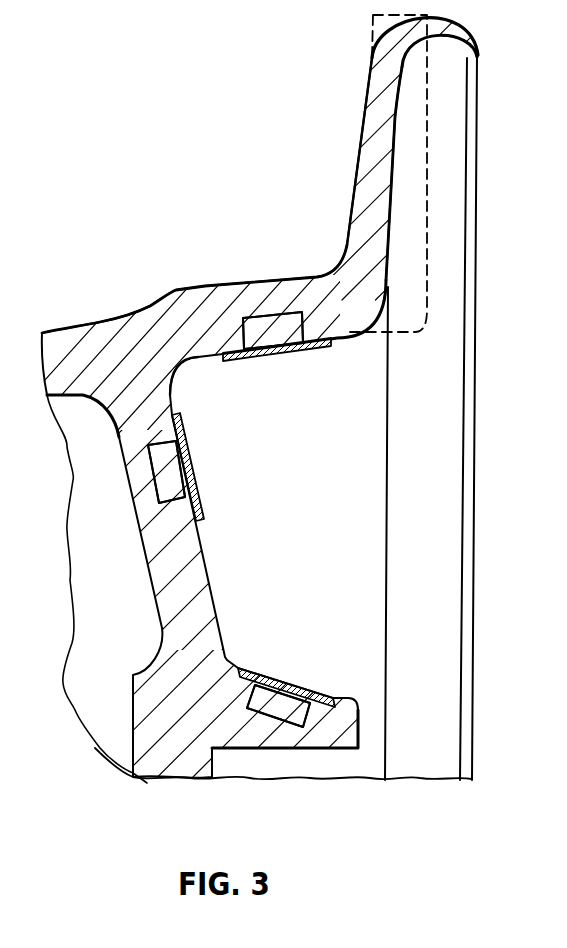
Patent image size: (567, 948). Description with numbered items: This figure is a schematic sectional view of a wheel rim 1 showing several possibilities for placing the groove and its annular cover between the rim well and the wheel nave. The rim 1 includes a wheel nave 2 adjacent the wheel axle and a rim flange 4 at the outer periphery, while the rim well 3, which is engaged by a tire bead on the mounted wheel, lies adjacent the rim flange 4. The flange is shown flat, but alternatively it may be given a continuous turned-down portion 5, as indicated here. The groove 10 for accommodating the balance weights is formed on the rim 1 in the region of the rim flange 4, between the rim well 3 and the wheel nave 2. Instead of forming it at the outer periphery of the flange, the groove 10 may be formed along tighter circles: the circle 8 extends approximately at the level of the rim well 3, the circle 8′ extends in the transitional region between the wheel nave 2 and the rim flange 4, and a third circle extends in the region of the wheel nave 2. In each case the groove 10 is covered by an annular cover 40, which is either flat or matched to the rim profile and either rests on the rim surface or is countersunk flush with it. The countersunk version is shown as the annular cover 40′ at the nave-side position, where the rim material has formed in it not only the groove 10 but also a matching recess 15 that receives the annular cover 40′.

The wheel rim 1 is at (90, 283).
The wheel nave 2 is at (311, 562).
The rim well 3 is at (176, 290).
The rim flange 4 is at (433, 131).
The continuous turned-down portion 5 is at (460, 24).
The circle 8 is at (275, 300).
The circle 8′ is at (138, 478).
The groove 10 is at (263, 328).
The annular cover 40 is at (289, 350).
The annular cover 40′ is at (305, 681).
The recess 15 is at (340, 751).